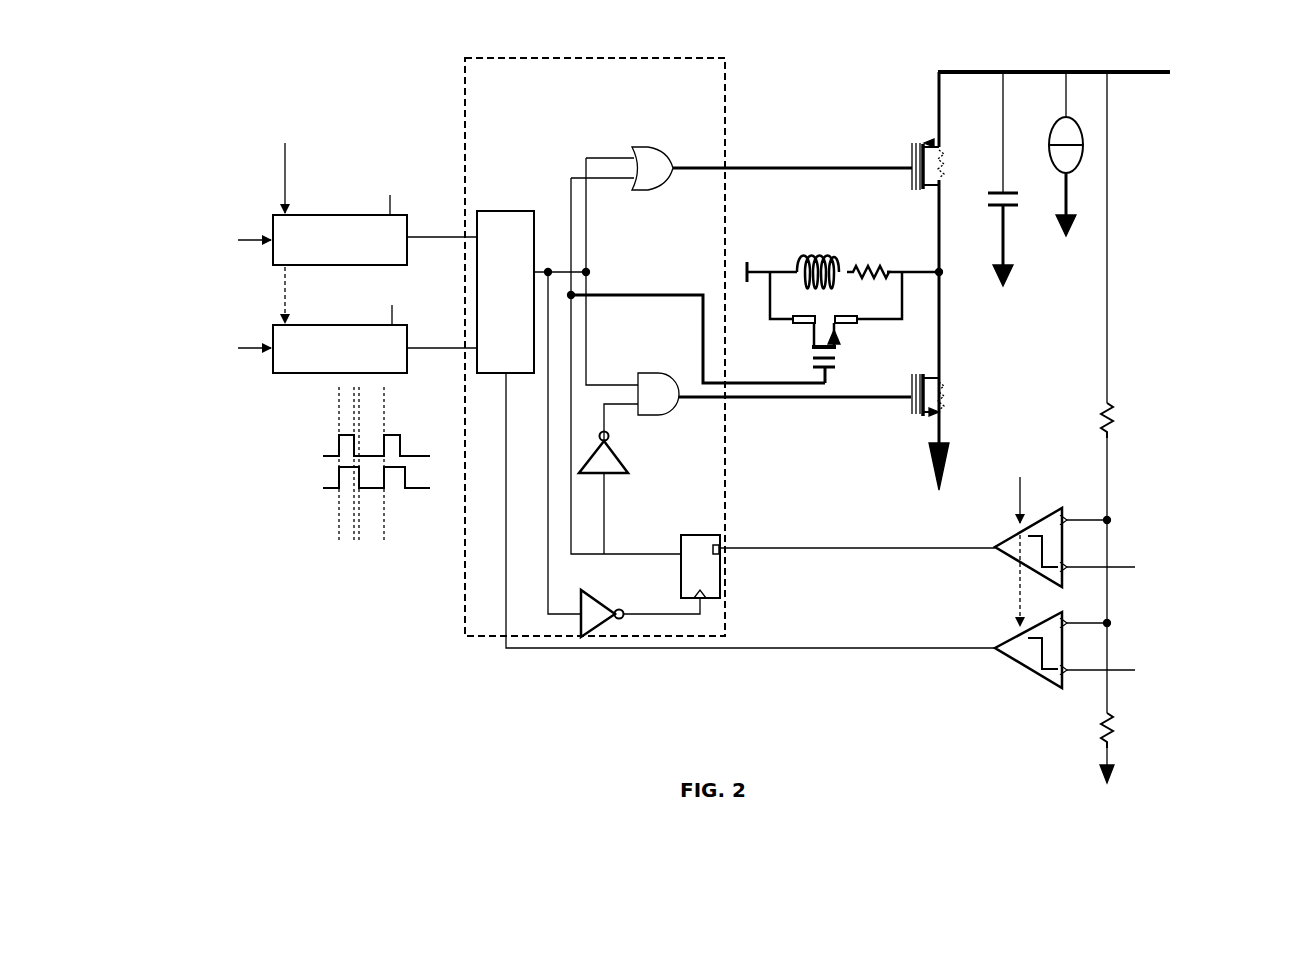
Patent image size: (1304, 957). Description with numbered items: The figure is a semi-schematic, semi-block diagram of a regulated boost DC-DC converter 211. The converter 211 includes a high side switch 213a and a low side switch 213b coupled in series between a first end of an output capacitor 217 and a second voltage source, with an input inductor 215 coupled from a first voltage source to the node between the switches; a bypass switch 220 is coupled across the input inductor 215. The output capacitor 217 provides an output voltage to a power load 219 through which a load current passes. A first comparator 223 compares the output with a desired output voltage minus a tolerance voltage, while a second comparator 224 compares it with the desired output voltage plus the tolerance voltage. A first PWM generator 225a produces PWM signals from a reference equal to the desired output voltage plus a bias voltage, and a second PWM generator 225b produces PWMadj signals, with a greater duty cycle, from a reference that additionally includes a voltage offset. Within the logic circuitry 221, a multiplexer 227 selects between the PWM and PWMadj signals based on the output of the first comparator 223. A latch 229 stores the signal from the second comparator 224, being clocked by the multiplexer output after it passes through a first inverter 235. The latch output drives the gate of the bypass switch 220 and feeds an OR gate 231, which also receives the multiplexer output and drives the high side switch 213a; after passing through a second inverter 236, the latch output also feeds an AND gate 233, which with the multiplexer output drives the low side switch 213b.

The converter 211 is at (826, 56).
The high side switch 213a is at (910, 145).
The low side switch 213b is at (915, 413).
The input inductor 215 is at (820, 258).
The output capacitor 217 is at (990, 207).
The power load 219 is at (1072, 118).
The bypass switch 220 is at (836, 372).
The logic circuitry 221 is at (463, 638).
The first comparator 223 is at (1015, 662).
The second comparator 224 is at (1012, 537).
The first pulse-width modulation (PWM) generator 225a is at (305, 214).
The second PWM generator 225b is at (282, 374).
The multiplexer 227 is at (503, 211).
The latch 229 is at (700, 535).
The OR gate 231 is at (646, 147).
The AND gate 233 is at (654, 373).
The first inverter 235 is at (606, 606).
The second inverter 236 is at (622, 463).